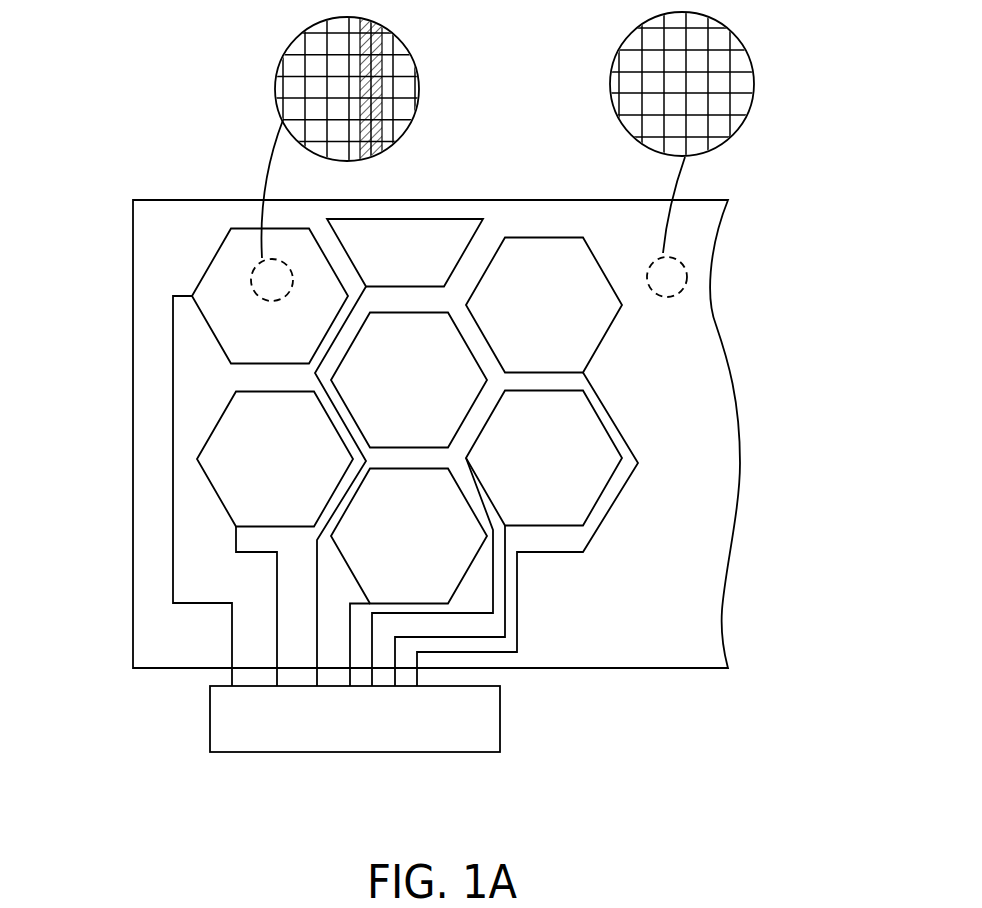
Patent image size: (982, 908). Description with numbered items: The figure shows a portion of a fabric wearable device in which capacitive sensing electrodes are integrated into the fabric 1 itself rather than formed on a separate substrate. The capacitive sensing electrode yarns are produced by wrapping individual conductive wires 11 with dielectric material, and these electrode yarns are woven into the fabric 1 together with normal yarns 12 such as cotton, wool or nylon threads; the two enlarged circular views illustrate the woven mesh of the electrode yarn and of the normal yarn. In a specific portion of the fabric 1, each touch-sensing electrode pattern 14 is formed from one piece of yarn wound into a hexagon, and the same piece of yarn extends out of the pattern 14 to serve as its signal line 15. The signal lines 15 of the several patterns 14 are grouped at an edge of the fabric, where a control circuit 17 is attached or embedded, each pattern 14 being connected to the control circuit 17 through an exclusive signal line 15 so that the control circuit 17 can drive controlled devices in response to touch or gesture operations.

The fabric 1 is at (697, 589).
The conductive wire 11 is at (343, 155).
The normal yarn 12 is at (708, 42).
The touch-sensing electrode pattern 14 is at (218, 270).
The signal line 15 is at (173, 395).
The control circuit 17 is at (470, 722).